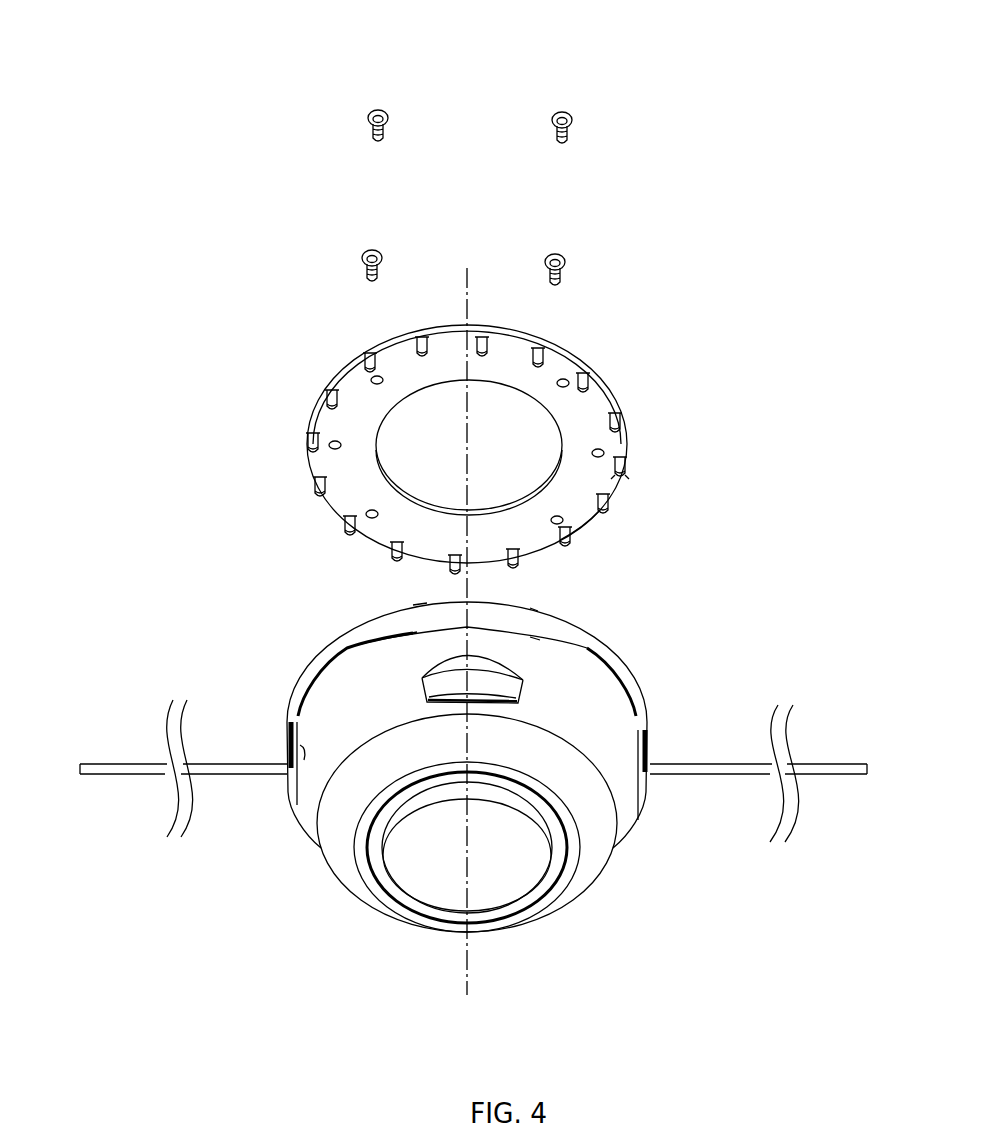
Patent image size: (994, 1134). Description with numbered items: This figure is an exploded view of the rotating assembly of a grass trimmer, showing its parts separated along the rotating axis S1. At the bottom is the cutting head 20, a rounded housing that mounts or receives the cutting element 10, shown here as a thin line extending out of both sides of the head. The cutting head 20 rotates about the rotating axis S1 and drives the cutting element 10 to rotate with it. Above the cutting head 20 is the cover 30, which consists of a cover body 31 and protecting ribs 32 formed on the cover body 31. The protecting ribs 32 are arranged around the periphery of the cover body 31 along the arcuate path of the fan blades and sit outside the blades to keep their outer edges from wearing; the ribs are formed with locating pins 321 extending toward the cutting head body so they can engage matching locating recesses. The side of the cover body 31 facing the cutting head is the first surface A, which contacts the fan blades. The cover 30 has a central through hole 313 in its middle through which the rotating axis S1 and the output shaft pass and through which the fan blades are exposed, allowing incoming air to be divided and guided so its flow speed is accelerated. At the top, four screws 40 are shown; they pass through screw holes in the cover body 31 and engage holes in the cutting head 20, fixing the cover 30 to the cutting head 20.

The cutting element 10 is at (123, 768).
The cutting head 20 is at (290, 922).
The cover 30 is at (555, 418).
The cover body 31 is at (578, 352).
The protecting ribs 32 is at (527, 455).
The locating pins 321 is at (621, 474).
The central through hole 313 is at (400, 445).
The screws 40 is at (570, 118).
The first surface A is at (576, 508).
The rotating axis S1 is at (487, 648).